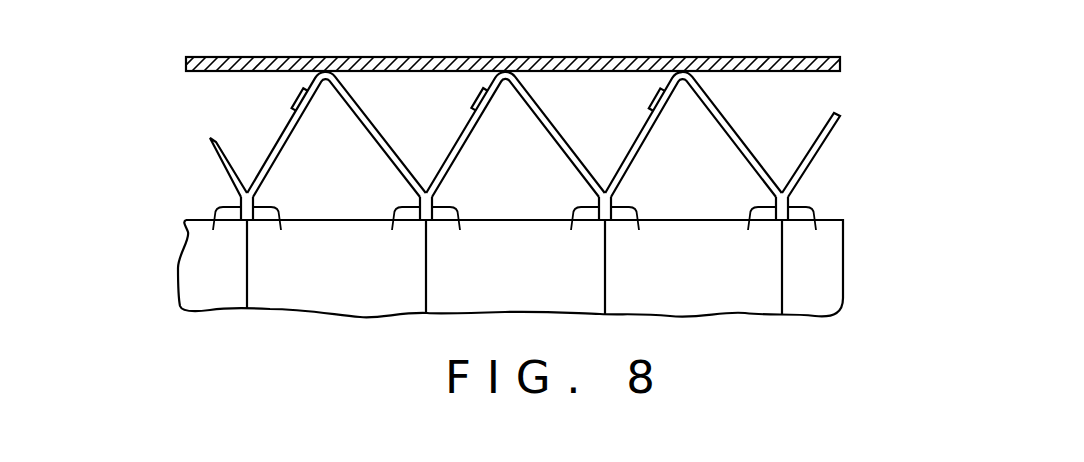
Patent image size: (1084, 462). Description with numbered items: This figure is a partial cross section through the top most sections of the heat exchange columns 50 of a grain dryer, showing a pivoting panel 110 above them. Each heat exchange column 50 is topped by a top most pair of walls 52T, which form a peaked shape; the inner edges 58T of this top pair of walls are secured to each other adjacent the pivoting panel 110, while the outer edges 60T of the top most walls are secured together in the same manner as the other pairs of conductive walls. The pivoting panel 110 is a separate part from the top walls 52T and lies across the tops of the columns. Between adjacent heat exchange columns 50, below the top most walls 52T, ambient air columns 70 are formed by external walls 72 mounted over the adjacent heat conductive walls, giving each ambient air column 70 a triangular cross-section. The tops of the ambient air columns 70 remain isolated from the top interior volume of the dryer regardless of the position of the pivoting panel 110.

The pivoting panel 110 is at (526, 57).
The heat exchange column 50 is at (268, 148).
The top most pair of walls 52T is at (212, 157).
The inner edges of the top pair of walls 58T is at (303, 90).
The outer edges of the top most walls 60T is at (516, 233).
The ambient air column 70 is at (360, 213).
The external wall 72 is at (210, 268).